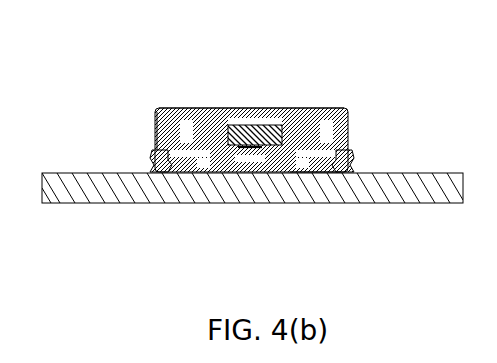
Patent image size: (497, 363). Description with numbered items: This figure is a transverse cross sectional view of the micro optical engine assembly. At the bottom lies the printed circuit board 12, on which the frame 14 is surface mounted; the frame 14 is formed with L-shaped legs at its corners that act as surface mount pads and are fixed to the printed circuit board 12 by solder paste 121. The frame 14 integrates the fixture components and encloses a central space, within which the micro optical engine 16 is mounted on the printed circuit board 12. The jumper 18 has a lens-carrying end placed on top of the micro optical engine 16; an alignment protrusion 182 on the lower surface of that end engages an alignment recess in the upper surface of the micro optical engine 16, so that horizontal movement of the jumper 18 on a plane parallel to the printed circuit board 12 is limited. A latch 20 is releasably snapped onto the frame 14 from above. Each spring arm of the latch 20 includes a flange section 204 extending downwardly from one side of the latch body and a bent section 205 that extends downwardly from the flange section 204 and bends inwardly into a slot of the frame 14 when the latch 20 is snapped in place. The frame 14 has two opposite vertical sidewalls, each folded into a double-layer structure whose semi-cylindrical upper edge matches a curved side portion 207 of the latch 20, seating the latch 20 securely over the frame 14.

The printed circuit board 12 is at (190, 203).
The solder paste 121 is at (327, 177).
The frame 14 is at (155, 113).
The micro optical engine 16 is at (207, 110).
The jumper 18 is at (312, 130).
The alignment protrusion 182 is at (233, 147).
The latch 20 is at (255, 108).
The flange section 204 is at (155, 132).
The bent section 205 is at (158, 153).
The curved side portion 207 is at (347, 112).